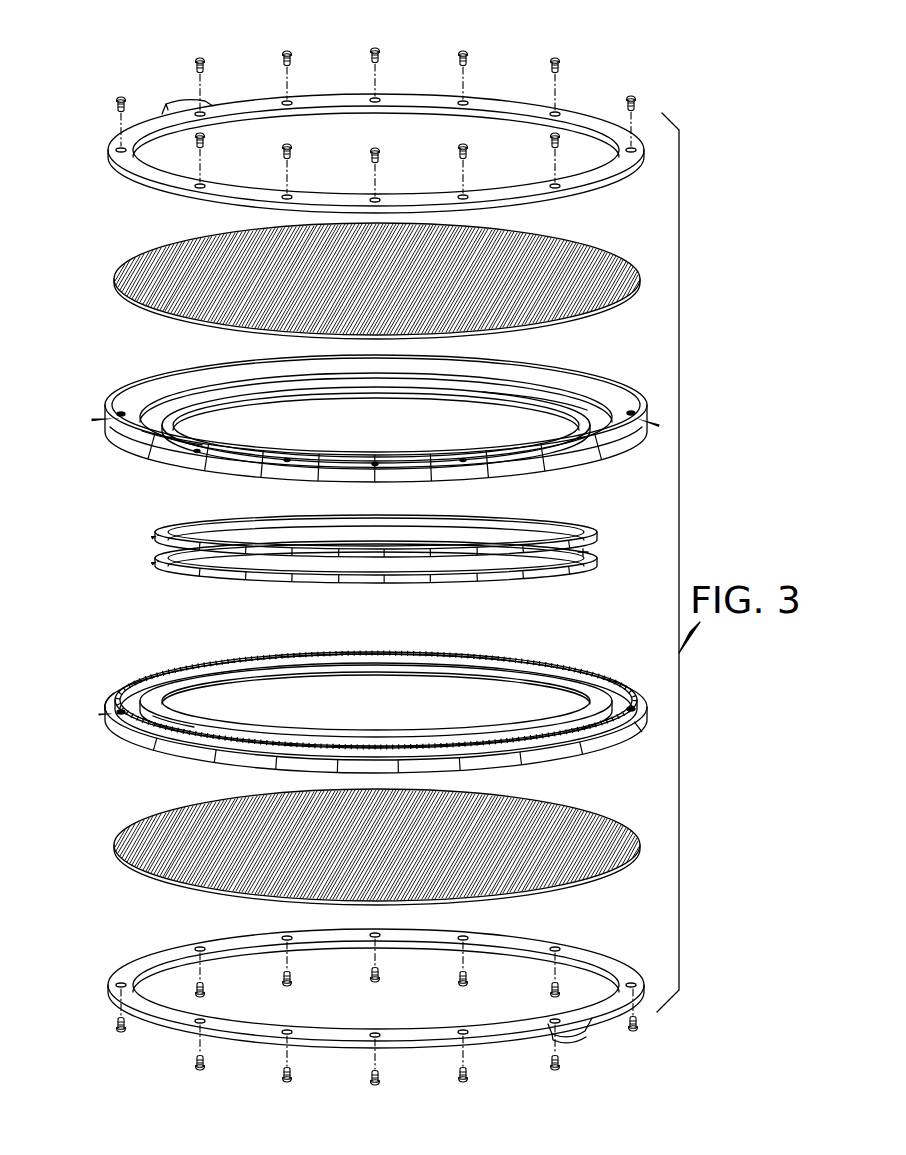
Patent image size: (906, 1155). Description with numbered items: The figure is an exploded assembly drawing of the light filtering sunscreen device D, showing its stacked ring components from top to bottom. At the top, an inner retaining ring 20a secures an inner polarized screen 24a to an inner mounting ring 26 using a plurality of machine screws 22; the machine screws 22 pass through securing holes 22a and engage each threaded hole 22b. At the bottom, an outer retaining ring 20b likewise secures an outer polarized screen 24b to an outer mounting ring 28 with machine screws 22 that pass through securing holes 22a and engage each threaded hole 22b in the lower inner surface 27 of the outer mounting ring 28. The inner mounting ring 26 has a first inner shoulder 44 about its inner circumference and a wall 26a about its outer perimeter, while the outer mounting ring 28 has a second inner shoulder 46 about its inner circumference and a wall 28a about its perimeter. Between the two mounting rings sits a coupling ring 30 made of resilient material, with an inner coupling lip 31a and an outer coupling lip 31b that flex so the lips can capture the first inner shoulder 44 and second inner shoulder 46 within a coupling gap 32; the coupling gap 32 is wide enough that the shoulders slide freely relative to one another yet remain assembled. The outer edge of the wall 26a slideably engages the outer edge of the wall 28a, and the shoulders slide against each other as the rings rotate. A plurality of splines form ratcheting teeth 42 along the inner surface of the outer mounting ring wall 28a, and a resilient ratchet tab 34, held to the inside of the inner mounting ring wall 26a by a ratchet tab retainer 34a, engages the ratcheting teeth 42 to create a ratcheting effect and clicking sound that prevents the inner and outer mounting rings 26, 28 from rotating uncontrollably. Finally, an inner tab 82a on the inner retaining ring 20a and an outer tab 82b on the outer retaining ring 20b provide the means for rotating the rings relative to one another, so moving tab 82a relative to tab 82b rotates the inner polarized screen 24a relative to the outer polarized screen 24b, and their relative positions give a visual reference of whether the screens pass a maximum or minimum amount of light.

The sunscreen device D is at (91, 86).
The inner retaining ring 20a is at (600, 176).
The outer retaining ring 20b is at (580, 947).
The machine screw 22 is at (557, 60).
The securing hole 22a is at (640, 152).
The threaded hole 22b is at (120, 420).
The inner polarized screen 24a is at (620, 297).
The outer polarized screen 24b is at (612, 846).
The inner mounting ring 26 is at (125, 395).
The inner mounting ring wall 26a is at (182, 467).
The lower inner surface of outer mounting ring 27 is at (143, 697).
The outer mounting ring 28 is at (193, 748).
The outer mounting ring wall 28a is at (140, 690).
The coupling ring 30 is at (370, 531).
The inner coupling lip 31a is at (157, 530).
The outer coupling lip 31b is at (157, 558).
The coupling gap 32 is at (590, 552).
The ratchet tab 34 is at (640, 425).
The ratchet tab retainer 34a is at (615, 397).
The ratcheting teeth 42 is at (586, 672).
The first inner shoulder 44 is at (203, 405).
The second inner shoulder 46 is at (155, 727).
The inner tab 82a is at (185, 100).
The outer tab 82b is at (582, 1034).